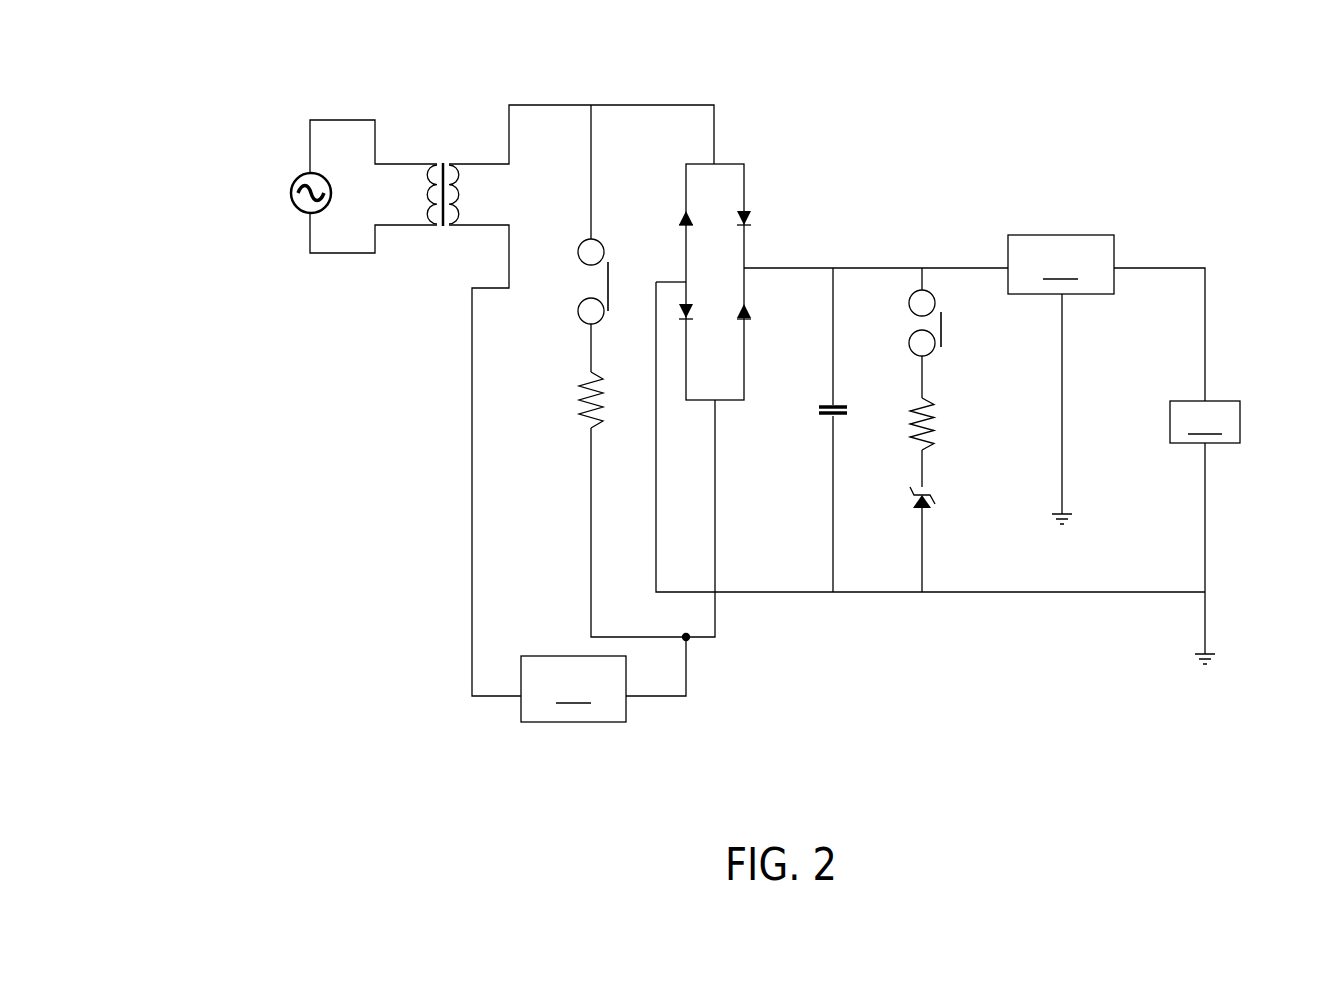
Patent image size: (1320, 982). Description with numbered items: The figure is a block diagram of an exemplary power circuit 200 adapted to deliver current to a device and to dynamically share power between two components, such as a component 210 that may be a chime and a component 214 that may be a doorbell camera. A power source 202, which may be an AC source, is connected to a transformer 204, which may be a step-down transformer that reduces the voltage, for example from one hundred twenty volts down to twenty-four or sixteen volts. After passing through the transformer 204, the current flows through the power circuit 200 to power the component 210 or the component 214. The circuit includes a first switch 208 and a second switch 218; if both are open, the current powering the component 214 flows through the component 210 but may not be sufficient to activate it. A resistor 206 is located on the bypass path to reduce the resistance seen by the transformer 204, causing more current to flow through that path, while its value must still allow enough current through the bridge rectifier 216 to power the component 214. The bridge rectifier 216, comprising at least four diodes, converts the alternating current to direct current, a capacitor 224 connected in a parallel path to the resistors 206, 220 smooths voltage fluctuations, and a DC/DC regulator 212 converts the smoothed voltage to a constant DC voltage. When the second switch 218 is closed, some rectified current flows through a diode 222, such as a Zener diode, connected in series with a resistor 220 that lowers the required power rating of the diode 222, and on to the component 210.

The power circuit 200 is at (195, 663).
The power source 202 is at (300, 213).
The transformer 204 is at (437, 157).
The resistor 206 is at (580, 405).
The first switch 208 is at (579, 277).
The component 210 is at (573, 689).
The DC/DC regulator 212 is at (1061, 379).
The component 214 is at (1205, 422).
The bridge rectifier 216 is at (745, 188).
The second switch 218 is at (945, 327).
The resistor 220 is at (943, 428).
The diode 222 is at (933, 508).
The capacitor 224 is at (820, 417).